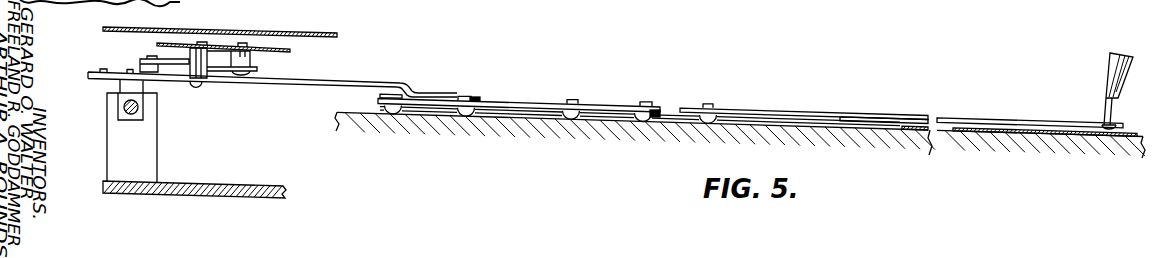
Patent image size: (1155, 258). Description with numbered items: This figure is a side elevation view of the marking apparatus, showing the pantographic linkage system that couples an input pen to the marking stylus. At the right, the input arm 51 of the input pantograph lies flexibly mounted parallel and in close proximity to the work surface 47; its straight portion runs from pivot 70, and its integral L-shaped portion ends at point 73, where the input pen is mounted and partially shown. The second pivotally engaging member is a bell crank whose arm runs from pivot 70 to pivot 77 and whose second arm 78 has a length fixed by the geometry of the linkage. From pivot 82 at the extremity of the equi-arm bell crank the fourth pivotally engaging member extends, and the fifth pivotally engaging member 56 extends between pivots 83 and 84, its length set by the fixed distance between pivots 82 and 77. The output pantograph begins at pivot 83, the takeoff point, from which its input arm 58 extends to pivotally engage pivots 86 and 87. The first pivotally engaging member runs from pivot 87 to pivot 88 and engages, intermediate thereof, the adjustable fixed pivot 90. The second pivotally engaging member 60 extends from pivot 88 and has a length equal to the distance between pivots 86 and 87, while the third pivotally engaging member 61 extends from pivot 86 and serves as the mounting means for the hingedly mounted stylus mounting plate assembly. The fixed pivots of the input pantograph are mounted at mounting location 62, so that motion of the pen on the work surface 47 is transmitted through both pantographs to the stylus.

The work surface 47 is at (1062, 128).
The input arm 51 is at (884, 117).
The fifth pivotally engaging member 56 is at (531, 100).
The input arm 58 is at (391, 83).
The second pivotally engaging member 60 is at (226, 82).
The third pivotally engaging member 61 is at (288, 51).
The mounting location 62 is at (446, 112).
The pivot 70 is at (712, 104).
The point 73 is at (1118, 119).
The pivot 77 is at (579, 100).
The second arm 78 is at (607, 119).
The pivot 82 is at (380, 96).
The pivot 83 is at (469, 95).
The pivot 84 is at (645, 102).
The pivot 86 is at (201, 43).
The pivot 87 is at (100, 68).
The pivot 88 is at (152, 56).
The fixed pivot 90 is at (130, 69).